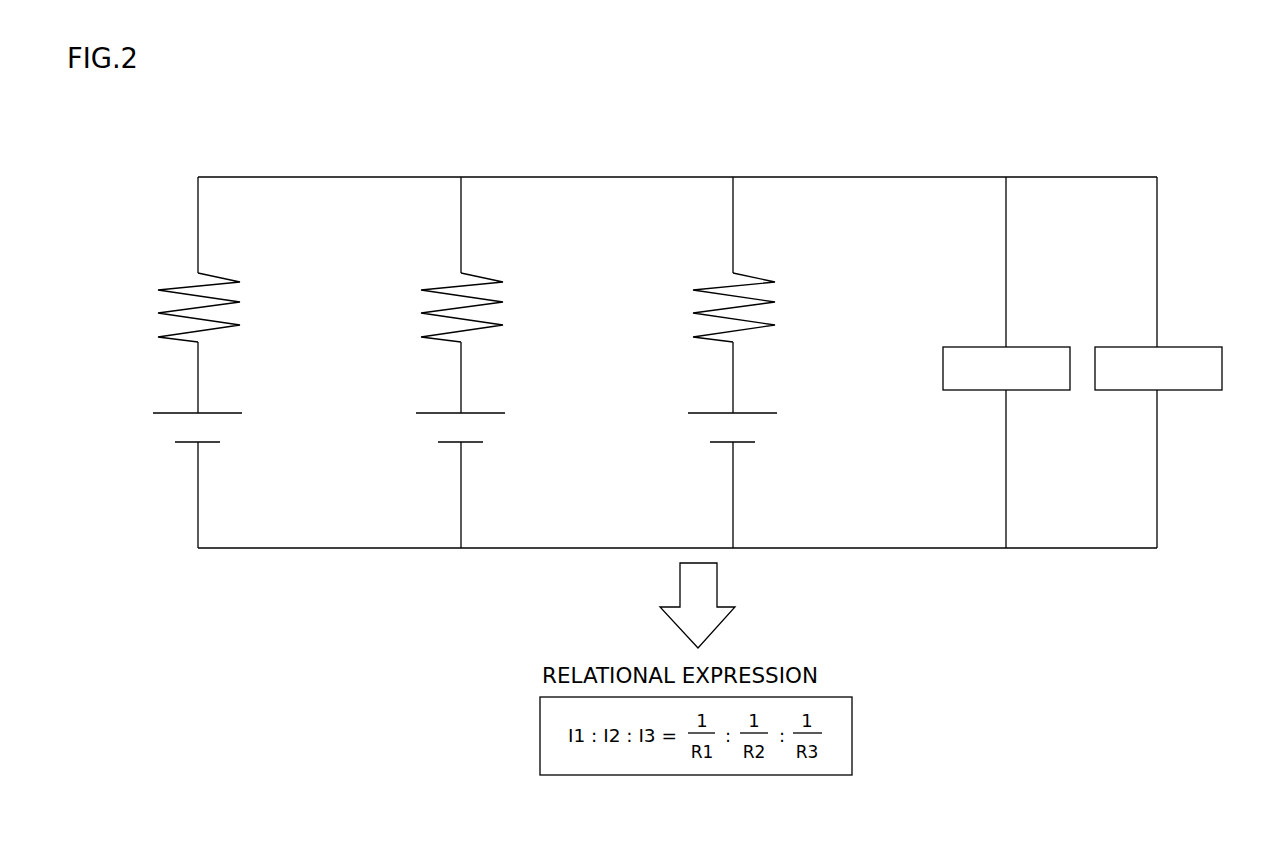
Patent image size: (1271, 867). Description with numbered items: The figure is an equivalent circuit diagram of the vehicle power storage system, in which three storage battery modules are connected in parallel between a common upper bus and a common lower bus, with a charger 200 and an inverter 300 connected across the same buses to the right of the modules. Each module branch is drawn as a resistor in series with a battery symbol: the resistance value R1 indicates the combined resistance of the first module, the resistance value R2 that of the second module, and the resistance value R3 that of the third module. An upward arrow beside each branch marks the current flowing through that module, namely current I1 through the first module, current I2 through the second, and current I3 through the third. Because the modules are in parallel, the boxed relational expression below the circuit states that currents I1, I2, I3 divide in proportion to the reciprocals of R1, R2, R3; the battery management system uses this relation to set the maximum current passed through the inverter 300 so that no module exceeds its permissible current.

The charger 200 is at (1033, 347).
The inverter 300 is at (1185, 347).
The resistance value R1 is at (217, 259).
The resistance value R2 is at (481, 259).
The resistance value R3 is at (757, 259).
The current I1 is at (257, 398).
The current I2 is at (522, 398).
The current I3 is at (802, 398).